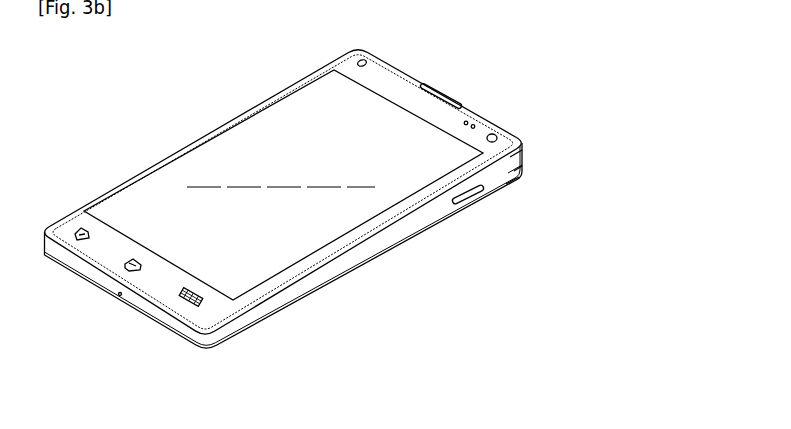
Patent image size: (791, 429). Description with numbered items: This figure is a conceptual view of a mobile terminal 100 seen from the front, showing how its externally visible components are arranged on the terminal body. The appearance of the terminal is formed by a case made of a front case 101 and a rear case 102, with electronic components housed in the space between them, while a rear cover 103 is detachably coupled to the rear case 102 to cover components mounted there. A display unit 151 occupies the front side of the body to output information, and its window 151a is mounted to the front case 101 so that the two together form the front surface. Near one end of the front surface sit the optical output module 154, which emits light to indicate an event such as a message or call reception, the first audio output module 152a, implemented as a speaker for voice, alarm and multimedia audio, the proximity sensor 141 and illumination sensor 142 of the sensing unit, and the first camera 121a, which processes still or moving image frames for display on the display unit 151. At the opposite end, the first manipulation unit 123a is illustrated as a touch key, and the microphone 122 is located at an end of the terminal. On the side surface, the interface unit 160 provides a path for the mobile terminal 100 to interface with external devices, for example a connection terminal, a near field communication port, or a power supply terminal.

The mobile terminal 100 is at (205, 75).
The display unit 151 is at (187, 174).
The window 151a is at (304, 110).
The optical output module 154 is at (367, 61).
The first audio output module 152a is at (433, 95).
The illumination sensor 142 is at (467, 121).
The proximity sensor 141 is at (475, 125).
The first camera 121a is at (498, 136).
The front case 101 is at (519, 151).
The rear case 102 is at (519, 166).
The rear cover 103 is at (514, 178).
The interface unit 160 is at (467, 199).
The microphone 122 is at (118, 296).
The first manipulation unit 123a is at (186, 303).